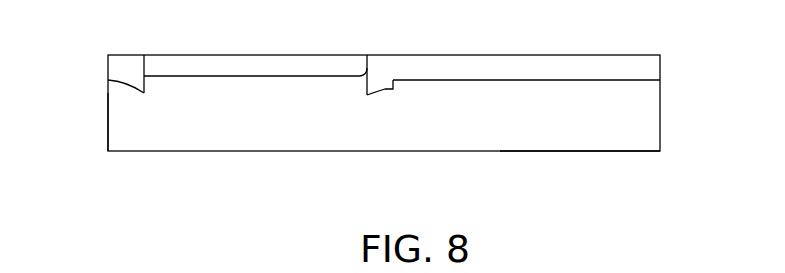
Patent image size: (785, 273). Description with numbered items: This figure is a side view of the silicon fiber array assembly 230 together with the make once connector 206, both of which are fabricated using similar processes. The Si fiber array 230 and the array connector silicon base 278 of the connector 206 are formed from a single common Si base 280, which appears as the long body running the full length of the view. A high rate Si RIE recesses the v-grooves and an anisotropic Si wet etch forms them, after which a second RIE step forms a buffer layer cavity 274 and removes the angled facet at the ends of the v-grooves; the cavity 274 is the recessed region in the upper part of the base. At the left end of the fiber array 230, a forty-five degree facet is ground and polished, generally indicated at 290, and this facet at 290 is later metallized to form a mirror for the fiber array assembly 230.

The make once connector 206 is at (632, 74).
The silicon fiber array assembly 230 is at (130, 121).
The buffer layer cavity 274 is at (144, 93).
The array connector silicon base 278 is at (660, 115).
The common Si base 280 is at (545, 168).
The 45 degree facet 290 is at (159, 61).